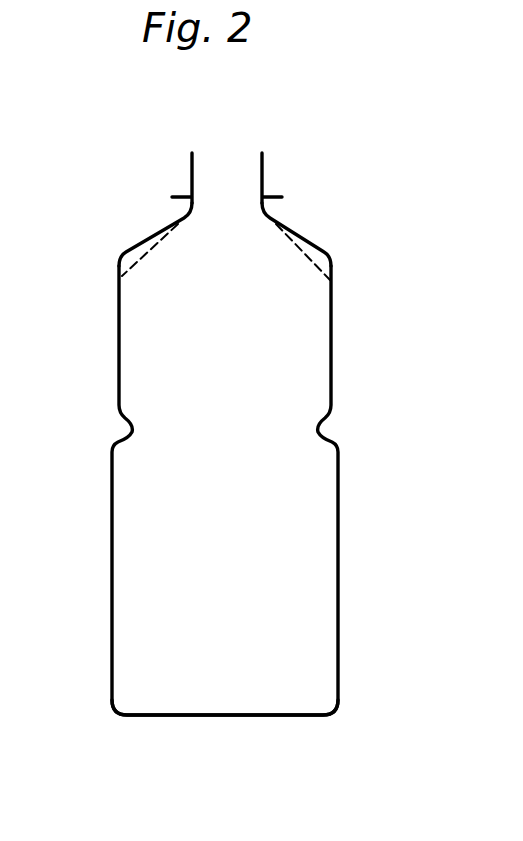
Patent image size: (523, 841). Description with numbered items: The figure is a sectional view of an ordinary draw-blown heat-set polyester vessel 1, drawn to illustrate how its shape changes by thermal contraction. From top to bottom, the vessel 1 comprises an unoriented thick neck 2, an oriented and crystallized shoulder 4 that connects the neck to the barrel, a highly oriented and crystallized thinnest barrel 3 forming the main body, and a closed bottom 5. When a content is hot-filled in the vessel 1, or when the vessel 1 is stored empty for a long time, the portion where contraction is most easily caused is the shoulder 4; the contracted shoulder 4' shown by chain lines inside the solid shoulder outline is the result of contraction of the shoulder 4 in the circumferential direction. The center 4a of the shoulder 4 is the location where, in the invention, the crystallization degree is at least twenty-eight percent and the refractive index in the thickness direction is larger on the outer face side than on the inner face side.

The vessel 1 is at (229, 478).
The neck 2 is at (294, 155).
The barrel 3 is at (368, 718).
The shoulder 4 is at (151, 233).
The contracted shoulder 4' is at (226, 255).
The center of the shoulder 4a is at (330, 248).
The closed bottom 5 is at (225, 737).